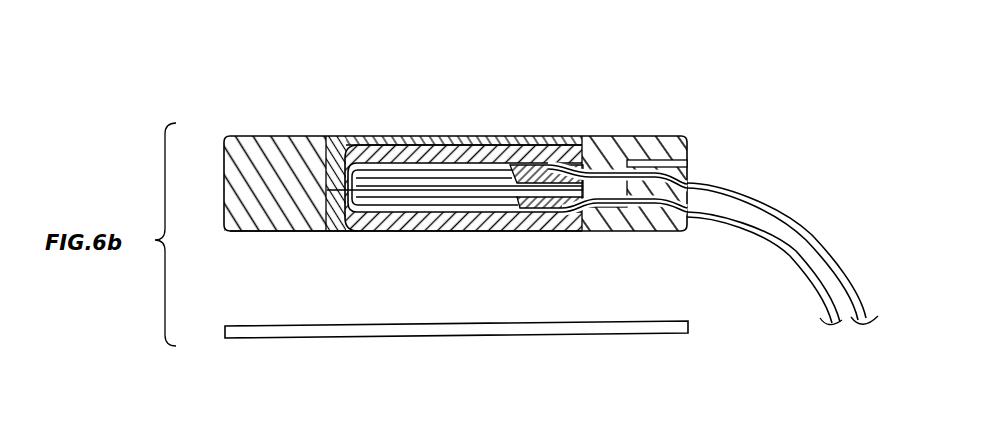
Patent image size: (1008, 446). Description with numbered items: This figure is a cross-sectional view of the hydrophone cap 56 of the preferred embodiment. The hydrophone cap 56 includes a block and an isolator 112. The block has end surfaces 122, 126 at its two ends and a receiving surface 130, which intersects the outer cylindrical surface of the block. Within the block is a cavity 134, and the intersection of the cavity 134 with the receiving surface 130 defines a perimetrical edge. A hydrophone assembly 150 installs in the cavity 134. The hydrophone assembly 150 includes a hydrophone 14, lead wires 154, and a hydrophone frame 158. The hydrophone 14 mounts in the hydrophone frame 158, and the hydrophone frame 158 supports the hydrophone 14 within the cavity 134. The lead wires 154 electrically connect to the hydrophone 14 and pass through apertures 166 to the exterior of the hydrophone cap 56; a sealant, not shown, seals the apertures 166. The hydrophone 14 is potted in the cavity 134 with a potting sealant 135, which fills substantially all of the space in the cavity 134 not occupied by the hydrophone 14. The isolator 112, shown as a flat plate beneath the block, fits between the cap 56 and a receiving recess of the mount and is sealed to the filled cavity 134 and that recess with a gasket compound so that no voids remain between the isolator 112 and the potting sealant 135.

The hydrophone cap 56 is at (538, 105).
The end surface 126 is at (222, 141).
The receiving surface 130 is at (284, 233).
The hydrophone frame 158 is at (327, 162).
The hydrophone 14 is at (420, 162).
The hydrophone assembly 150 is at (470, 231).
The cavity 134 is at (340, 232).
The potting sealant 135 is at (455, 187).
The apertures 166 is at (601, 172).
The end surface 122 is at (693, 227).
The lead wires 154 is at (848, 291).
The isolator 112 is at (632, 337).